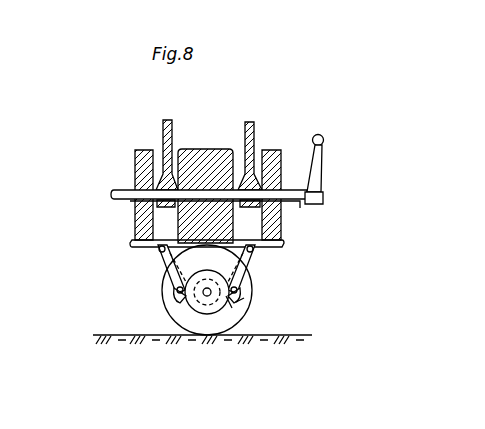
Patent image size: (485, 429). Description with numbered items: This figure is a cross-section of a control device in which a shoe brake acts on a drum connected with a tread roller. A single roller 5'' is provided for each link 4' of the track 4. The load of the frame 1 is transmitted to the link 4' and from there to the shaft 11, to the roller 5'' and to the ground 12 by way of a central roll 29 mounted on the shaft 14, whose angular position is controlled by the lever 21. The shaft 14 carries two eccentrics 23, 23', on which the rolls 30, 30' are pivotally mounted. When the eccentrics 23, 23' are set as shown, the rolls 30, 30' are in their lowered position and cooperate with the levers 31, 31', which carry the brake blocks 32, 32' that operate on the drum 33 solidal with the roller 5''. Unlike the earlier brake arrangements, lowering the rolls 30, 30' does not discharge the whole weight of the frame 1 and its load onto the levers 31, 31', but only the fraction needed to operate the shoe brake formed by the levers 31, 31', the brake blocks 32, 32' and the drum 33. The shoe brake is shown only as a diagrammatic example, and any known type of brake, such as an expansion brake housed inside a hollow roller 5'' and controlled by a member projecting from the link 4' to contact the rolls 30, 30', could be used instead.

The frame 1 is at (163, 128).
The central roll 29 is at (207, 150).
The shaft 14 is at (120, 190).
The lever 21 is at (322, 164).
The eccentric 23 is at (136, 212).
The eccentric 23' is at (301, 208).
The roll 30 is at (105, 204).
The roll 30' is at (325, 200).
The link 4' is at (125, 269).
The track 4 is at (301, 269).
The lever 31 is at (153, 322).
The lever 31' is at (308, 291).
The roller 5'' is at (309, 311).
The brake block 32' is at (270, 341).
The brake block 32 is at (200, 328).
The drum 33 is at (211, 298).
The shaft 11 is at (210, 296).
The ground 12 is at (113, 334).